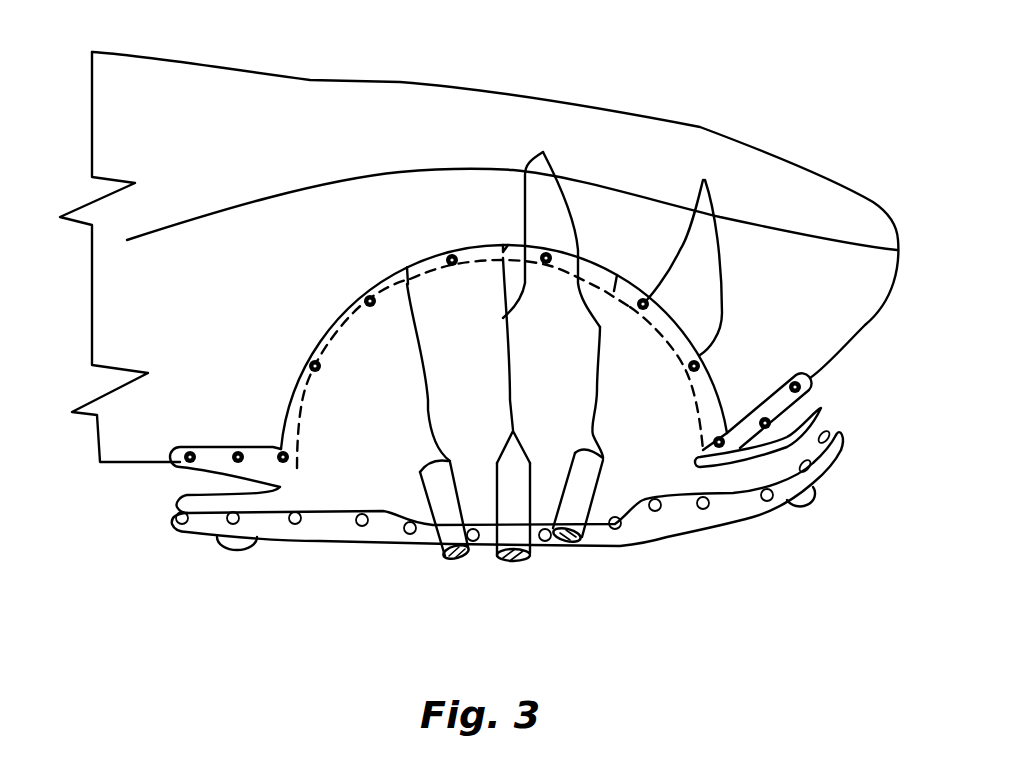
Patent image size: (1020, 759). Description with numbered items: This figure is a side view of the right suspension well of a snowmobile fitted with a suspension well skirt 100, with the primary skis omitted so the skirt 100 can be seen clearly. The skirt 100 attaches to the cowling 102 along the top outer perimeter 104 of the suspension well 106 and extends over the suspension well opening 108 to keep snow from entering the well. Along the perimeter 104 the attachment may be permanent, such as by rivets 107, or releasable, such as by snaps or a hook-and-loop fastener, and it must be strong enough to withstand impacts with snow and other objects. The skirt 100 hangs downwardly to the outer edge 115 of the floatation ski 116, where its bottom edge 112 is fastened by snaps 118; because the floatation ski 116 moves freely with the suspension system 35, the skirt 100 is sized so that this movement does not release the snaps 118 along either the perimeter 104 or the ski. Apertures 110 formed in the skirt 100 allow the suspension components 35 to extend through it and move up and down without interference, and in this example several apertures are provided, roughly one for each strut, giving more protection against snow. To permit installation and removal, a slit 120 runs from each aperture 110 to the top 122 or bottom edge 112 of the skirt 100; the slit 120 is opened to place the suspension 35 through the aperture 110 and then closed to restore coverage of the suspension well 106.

The suspension system 35 is at (490, 597).
The skirt 100 is at (643, 453).
The cowling 102 is at (670, 133).
The perimeter 104 is at (717, 390).
The suspension well 106 is at (337, 337).
The rivets 107 is at (704, 181).
The suspension well opening 108 is at (347, 432).
The aperture 110 is at (440, 441).
The bottom edge 112 is at (207, 527).
The outer edge 115 is at (840, 437).
The floatation ski 116 is at (750, 513).
The snaps 118 is at (618, 540).
The slit 120 is at (543, 152).
The top 122 is at (430, 250).